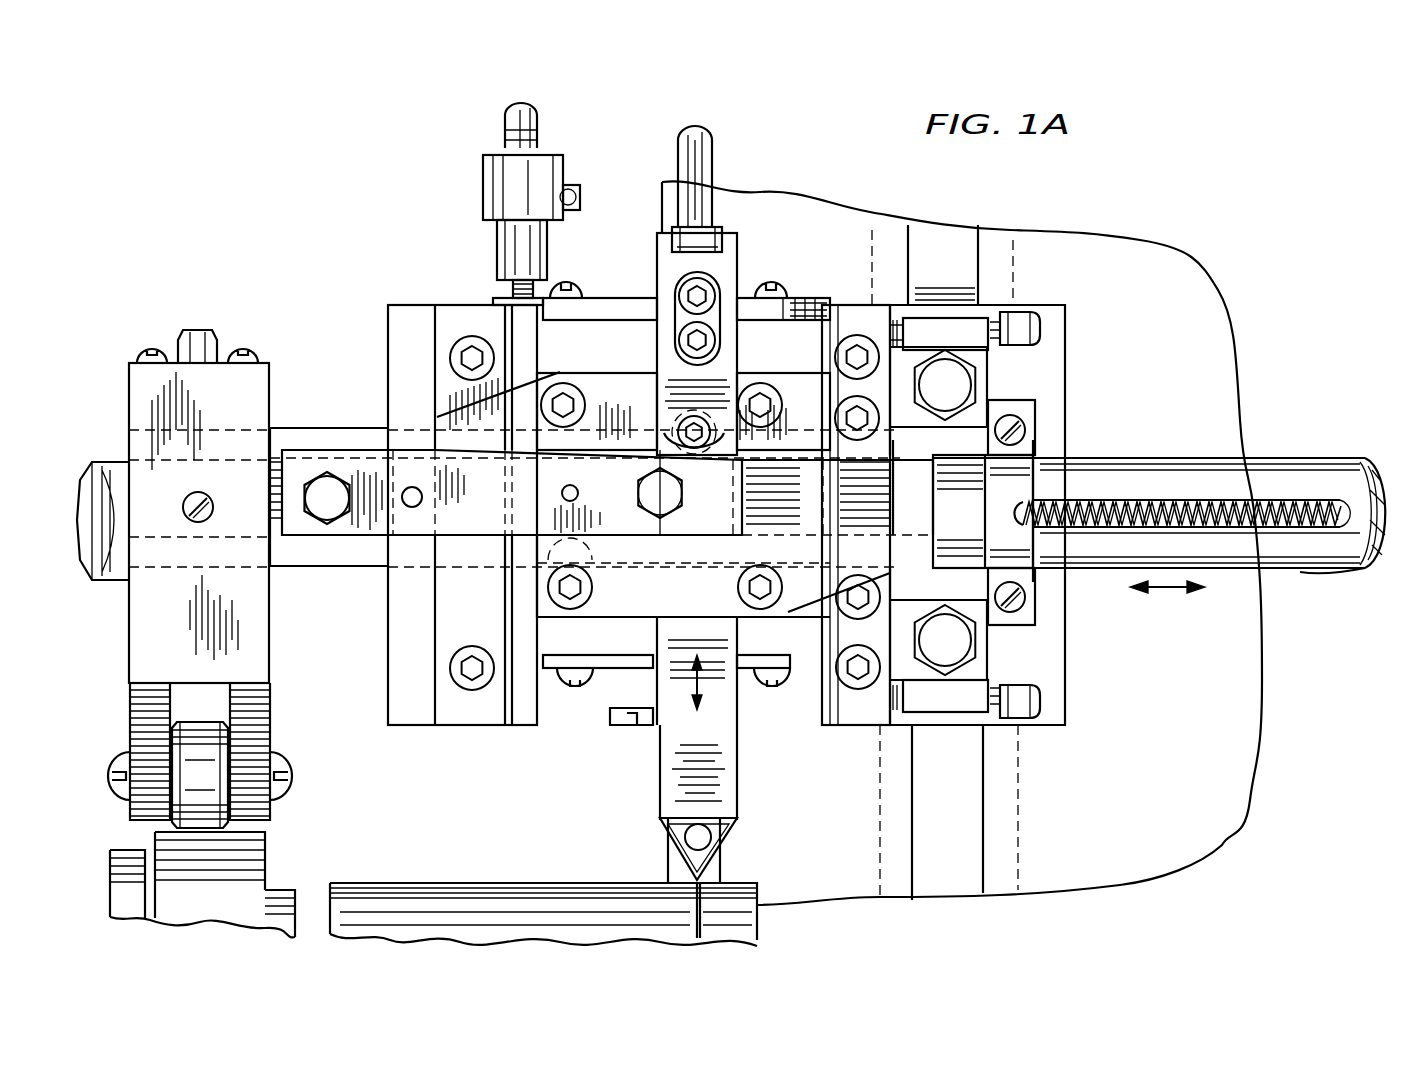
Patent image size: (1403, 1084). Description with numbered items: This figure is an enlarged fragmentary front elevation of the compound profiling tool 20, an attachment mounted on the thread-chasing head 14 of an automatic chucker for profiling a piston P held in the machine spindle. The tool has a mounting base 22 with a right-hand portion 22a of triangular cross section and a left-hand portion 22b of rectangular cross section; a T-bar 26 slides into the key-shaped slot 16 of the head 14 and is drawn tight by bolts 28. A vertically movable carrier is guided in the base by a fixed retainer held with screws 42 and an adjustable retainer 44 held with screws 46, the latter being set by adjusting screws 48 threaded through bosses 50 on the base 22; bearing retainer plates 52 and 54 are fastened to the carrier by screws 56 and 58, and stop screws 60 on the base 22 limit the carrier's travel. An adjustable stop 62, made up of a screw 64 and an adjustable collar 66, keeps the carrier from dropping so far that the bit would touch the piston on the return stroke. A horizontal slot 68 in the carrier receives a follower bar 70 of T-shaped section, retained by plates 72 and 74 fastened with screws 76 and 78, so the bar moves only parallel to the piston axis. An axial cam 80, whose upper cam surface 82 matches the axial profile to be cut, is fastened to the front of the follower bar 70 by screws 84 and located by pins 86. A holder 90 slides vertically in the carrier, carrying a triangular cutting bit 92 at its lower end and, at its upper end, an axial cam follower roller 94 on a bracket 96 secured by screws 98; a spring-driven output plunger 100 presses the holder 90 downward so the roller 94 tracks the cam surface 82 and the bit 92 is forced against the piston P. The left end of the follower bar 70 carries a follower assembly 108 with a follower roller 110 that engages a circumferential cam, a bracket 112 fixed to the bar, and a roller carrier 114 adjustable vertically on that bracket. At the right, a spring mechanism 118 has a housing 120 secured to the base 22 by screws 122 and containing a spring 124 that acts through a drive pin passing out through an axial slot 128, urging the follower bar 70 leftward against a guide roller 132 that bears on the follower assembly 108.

The thread-chasing head 14 is at (1180, 786).
The key-shaped slot 16 is at (985, 890).
The compound profiling tool 20 is at (1037, 506).
The mounting base 22 is at (1065, 316).
The base portion 22a is at (1035, 592).
The base portion 22b is at (388, 332).
The T-bar 26 is at (938, 293).
The bolts 28 is at (957, 385).
The screws 42 is at (465, 340).
The adjustable retainer 44 is at (866, 712).
The screws 46 is at (840, 416).
The adjusting screws 48 is at (1020, 325).
The bosses 50 is at (972, 320).
The bearing retainer plate 52 is at (640, 660).
The bearing retainer plate 54 is at (621, 300).
The screws 56 is at (575, 678).
The screws 58 is at (572, 296).
The stop screws 60 is at (620, 722).
The adjustable stop 62 is at (514, 193).
The screw 64 is at (527, 127).
The adjustable collar 66 is at (540, 175).
The horizontal slot 68 is at (550, 558).
The follower bar 70 is at (302, 426).
The retainer plate 72 is at (710, 598).
The retainer plate 74 is at (635, 419).
The screws 76 is at (592, 590).
The screws 78 is at (563, 383).
The axial cam 80 is at (380, 523).
The cam surface 82 is at (358, 450).
The screws 84 is at (320, 508).
The locating pins 86 is at (562, 493).
The holder 90 is at (705, 290).
The cutting bit 92 is at (722, 870).
The axial cam follower roller 94 is at (690, 448).
The bracket 96 is at (657, 342).
The screws 98 is at (705, 340).
The output plunger 100 is at (700, 165).
The follower assembly 108 is at (118, 400).
The follower roller 110 is at (195, 785).
The bracket 112 is at (250, 862).
The follower roller carrier 114 is at (155, 655).
The spring mechanism 118 is at (1328, 575).
The housing 120 is at (1305, 478).
The screws 122 is at (1022, 432).
The spring 124 is at (1188, 503).
The axial slot 128 is at (1244, 520).
The guide roller 132 is at (105, 580).
The piston P is at (487, 895).